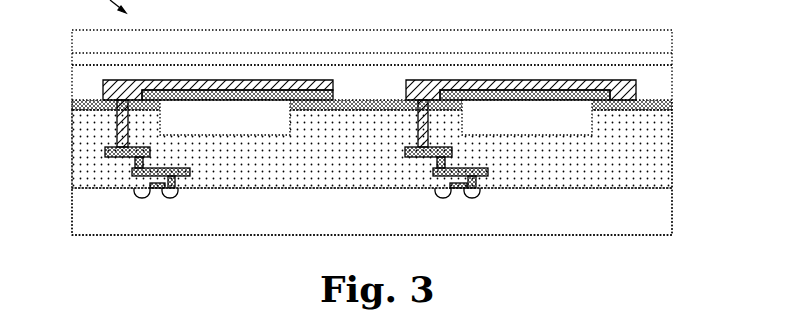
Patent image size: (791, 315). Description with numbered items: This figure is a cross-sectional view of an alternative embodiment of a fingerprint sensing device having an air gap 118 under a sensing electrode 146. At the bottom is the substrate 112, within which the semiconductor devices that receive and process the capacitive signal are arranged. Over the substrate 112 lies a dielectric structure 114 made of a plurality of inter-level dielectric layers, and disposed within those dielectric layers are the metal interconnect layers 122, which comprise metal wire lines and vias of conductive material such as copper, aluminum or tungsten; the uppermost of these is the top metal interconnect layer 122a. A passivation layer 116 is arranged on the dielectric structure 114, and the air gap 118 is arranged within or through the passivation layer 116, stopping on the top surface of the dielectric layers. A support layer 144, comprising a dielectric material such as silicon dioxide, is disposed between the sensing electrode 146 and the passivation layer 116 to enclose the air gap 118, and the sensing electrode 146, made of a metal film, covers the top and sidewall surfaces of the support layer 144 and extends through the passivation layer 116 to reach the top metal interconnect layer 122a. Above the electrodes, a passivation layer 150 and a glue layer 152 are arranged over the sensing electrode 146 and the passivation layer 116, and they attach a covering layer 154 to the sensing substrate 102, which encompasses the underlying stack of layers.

The sensing substrate 102 is at (62, 100).
The substrate 112 is at (672, 212).
The dielectric structure 114 is at (672, 137).
The passivation layer 116 is at (672, 100).
The air gap 118 is at (240, 122).
The metal interconnect layers 122 is at (490, 162).
The top metal interconnect layer 122a is at (410, 148).
The support layer 144 is at (575, 91).
The sensing electrode 146 is at (480, 91).
The passivation layer 150 is at (672, 65).
The glue layer 152 is at (672, 53).
The covering layer 154 is at (672, 31).